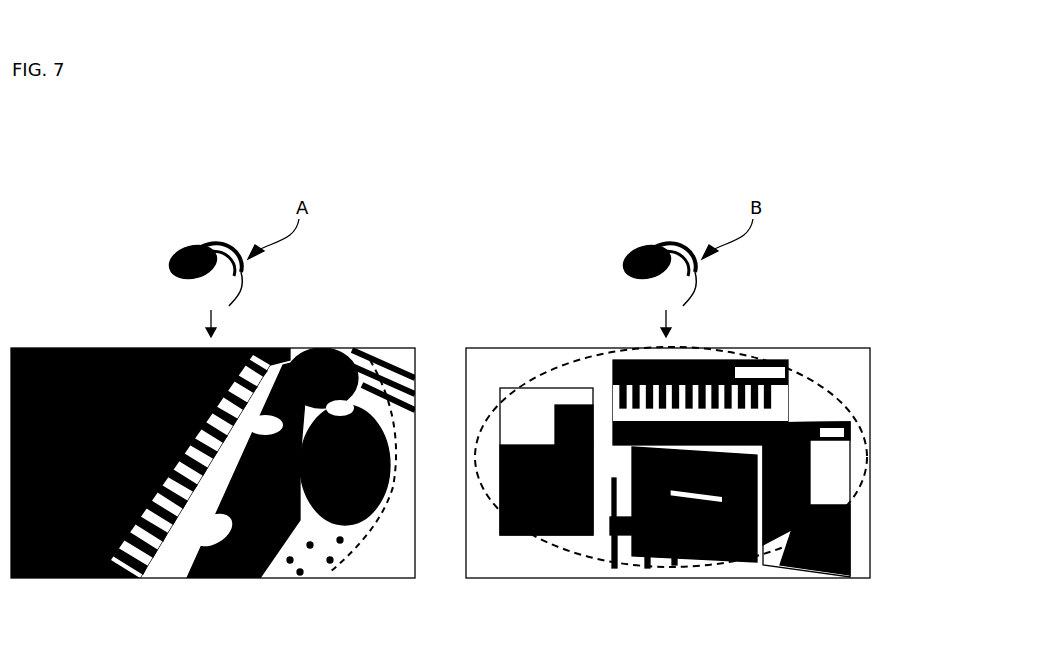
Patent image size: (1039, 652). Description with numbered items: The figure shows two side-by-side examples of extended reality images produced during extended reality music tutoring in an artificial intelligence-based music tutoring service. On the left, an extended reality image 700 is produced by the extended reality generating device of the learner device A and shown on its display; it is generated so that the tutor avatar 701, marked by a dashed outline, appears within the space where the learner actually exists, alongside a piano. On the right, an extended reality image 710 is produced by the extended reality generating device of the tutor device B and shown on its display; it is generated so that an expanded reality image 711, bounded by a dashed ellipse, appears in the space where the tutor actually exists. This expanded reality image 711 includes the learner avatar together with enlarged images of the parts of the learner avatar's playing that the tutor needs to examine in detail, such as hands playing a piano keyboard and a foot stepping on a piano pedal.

The extended reality image 700 is at (55, 332).
The tutor avatar 701 is at (402, 436).
The extended reality image 710 is at (510, 338).
The expanded reality image 711 is at (870, 436).